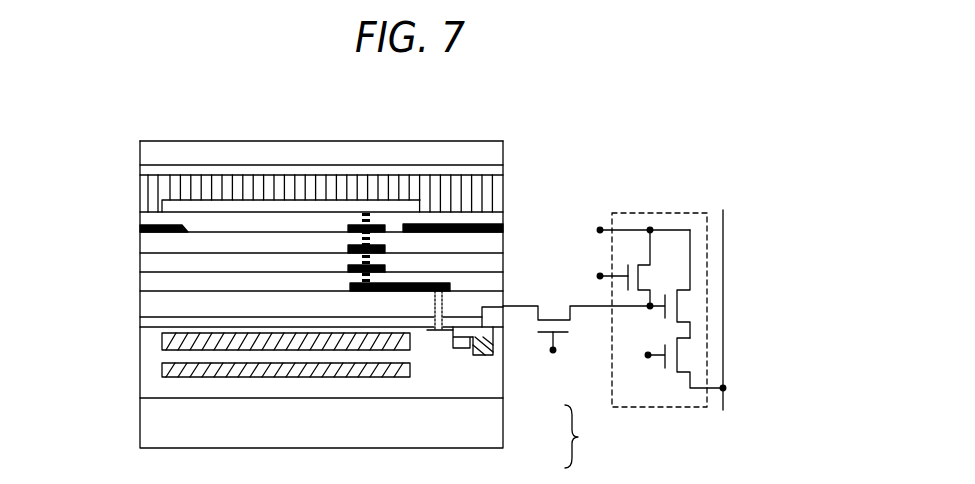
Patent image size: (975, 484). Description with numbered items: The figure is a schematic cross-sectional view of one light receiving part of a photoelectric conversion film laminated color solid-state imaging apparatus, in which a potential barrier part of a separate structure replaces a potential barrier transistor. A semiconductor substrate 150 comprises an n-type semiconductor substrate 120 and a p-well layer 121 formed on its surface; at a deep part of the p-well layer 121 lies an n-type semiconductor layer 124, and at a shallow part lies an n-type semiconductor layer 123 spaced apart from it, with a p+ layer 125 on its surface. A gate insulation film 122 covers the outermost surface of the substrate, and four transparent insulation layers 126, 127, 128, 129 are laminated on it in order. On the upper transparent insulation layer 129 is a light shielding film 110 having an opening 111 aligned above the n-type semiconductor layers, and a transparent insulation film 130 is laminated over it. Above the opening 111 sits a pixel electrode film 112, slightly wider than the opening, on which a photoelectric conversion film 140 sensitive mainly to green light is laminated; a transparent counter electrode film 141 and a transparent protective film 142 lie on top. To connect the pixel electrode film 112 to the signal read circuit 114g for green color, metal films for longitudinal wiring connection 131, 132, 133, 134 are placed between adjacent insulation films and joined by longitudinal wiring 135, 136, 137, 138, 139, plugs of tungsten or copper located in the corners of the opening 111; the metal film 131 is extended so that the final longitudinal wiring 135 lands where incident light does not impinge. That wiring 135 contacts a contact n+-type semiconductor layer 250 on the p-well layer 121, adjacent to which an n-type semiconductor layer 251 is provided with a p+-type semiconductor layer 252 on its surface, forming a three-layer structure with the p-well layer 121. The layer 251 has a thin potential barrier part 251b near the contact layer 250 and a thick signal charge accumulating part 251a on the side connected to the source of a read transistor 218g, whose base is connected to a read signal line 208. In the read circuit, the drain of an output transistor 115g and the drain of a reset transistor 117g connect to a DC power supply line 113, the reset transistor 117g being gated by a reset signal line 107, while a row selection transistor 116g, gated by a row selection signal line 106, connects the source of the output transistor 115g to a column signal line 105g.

The column signal line 105g is at (727, 391).
The row selection signal line 106 is at (648, 358).
The reset signal line 107 is at (598, 276).
The light shielding film 110 is at (148, 228).
The opening 111 is at (186, 228).
The pixel electrode film 112 is at (278, 195).
The DC power supply line 113 is at (602, 229).
The signal read circuit for green color 114g is at (700, 213).
The output transistor 115g is at (683, 305).
The row selection transistor 116g is at (683, 355).
The reset transistor 117g is at (645, 278).
The n-type semiconductor substrate 120 is at (500, 420).
The p-well layer 121 is at (500, 385).
The gate insulation film 122 is at (148, 326).
The n-type semiconductor layer 123 is at (175, 347).
The n-type semiconductor layer 124 is at (175, 372).
The p+ layer 125 is at (300, 350).
The transparent insulation layer 126 is at (148, 316).
The transparent insulation layer 127 is at (150, 283).
The transparent insulation layer 128 is at (148, 262).
The transparent insulation layer 129 is at (148, 237).
The transparent insulation film 130 is at (150, 212).
The metal film for longitudinal wiring connection 131 is at (440, 283).
The metal film for longitudinal wiring connection 132 is at (393, 256).
The metal film for longitudinal wiring connection 133 is at (385, 265).
The metal film for longitudinal wiring connection 134 is at (367, 243).
The longitudinal wiring 135 is at (402, 320).
The longitudinal wiring 136 is at (352, 282).
The longitudinal wiring 137 is at (348, 260).
The longitudinal wiring 138 is at (348, 242).
The longitudinal wiring 139 is at (360, 222).
The photoelectric conversion film 140 is at (190, 186).
The counter electrode film 141 is at (143, 168).
The transparent protective film 142 is at (160, 148).
The semiconductor substrate 150 is at (590, 436).
The read signal line 208 is at (556, 352).
The read transistor 218g is at (550, 305).
The contact n+-type semiconductor layer 250 is at (433, 312).
The n-type semiconductor layer 251 is at (480, 356).
The signal charge accumulating part 251a is at (496, 345).
The potential barrier part 251b is at (453, 347).
The p+-type semiconductor layer 252 is at (458, 330).